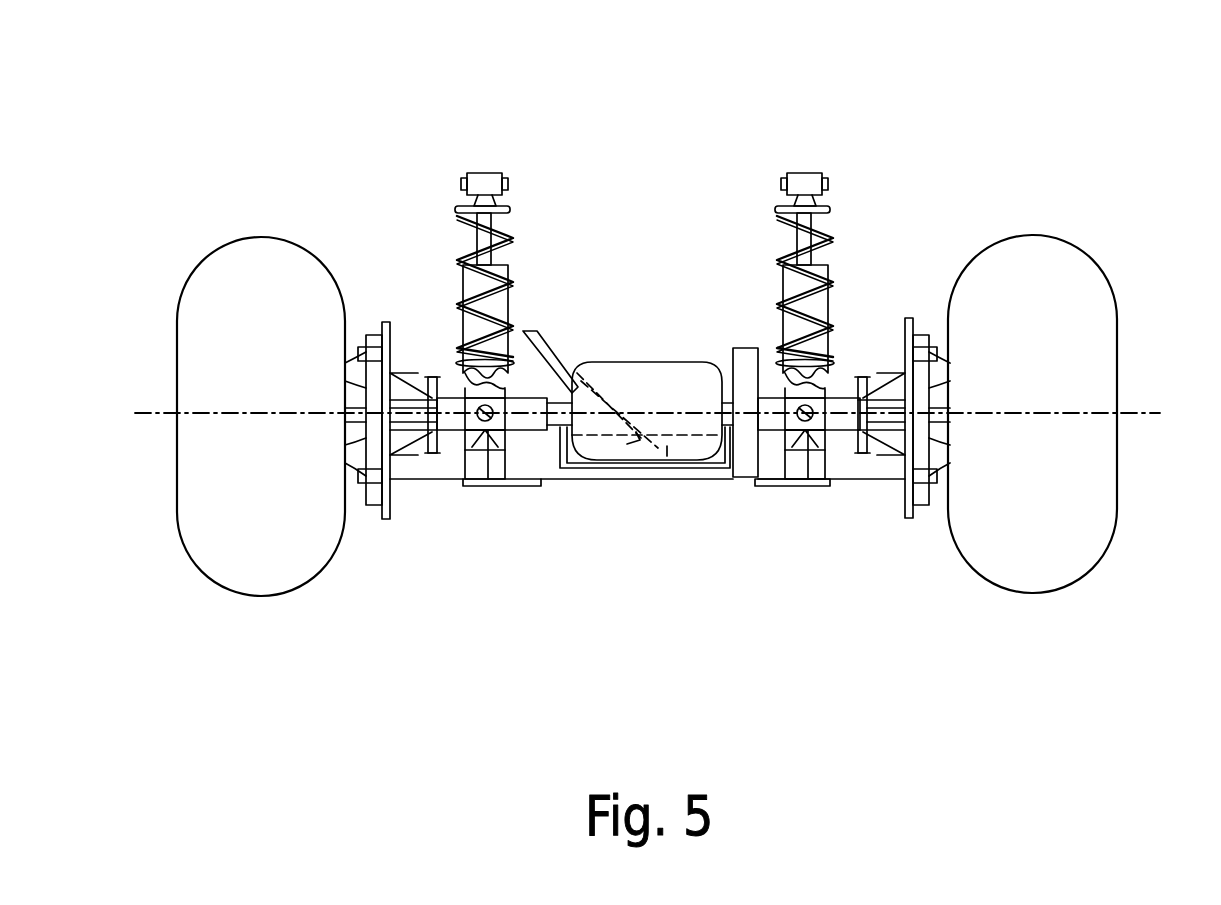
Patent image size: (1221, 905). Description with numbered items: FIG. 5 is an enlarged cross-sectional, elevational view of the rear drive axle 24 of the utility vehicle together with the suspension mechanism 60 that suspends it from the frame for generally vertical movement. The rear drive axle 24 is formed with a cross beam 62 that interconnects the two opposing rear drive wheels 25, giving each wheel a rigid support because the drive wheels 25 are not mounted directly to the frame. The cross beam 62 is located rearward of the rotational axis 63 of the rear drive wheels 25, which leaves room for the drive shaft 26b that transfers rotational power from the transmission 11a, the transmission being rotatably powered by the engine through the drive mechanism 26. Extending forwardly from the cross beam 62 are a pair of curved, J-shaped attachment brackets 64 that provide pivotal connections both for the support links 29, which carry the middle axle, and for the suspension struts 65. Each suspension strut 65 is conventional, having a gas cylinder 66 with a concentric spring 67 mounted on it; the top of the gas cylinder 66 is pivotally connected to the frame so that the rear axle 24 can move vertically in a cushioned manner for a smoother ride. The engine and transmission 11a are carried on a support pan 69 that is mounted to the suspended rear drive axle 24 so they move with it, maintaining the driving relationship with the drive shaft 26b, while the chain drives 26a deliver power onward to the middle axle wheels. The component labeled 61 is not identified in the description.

The transmission 11a is at (620, 360).
The rear drive axle 24 is at (770, 372).
The rear drive wheels 25 is at (238, 240).
The drive mechanism 26 is at (735, 350).
The chain drives 26a is at (430, 377).
The drive shaft 26b is at (553, 480).
The support links 29 is at (489, 480).
The suspension mechanism 60 is at (443, 58).
The motor housing 61 is at (583, 368).
The cross beam 62 is at (880, 481).
The rotational axis 63 is at (1118, 412).
The attachment brackets 64 is at (468, 486).
The suspension struts 65 is at (403, 188).
The gas cylinder 66 is at (510, 357).
The concentric spring 67 is at (507, 232).
The support pan 69 is at (611, 480).